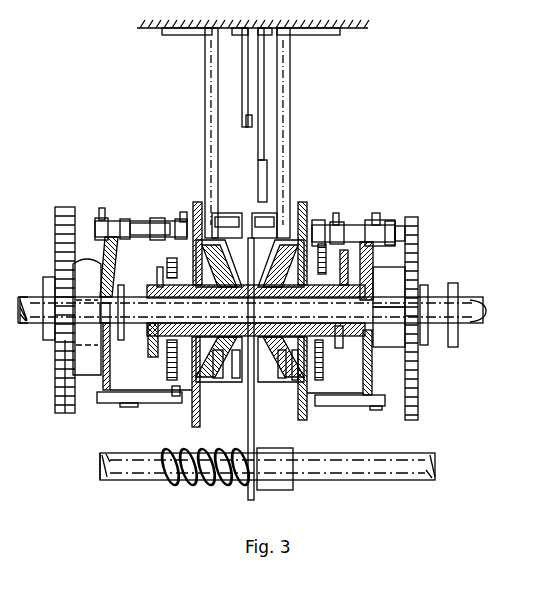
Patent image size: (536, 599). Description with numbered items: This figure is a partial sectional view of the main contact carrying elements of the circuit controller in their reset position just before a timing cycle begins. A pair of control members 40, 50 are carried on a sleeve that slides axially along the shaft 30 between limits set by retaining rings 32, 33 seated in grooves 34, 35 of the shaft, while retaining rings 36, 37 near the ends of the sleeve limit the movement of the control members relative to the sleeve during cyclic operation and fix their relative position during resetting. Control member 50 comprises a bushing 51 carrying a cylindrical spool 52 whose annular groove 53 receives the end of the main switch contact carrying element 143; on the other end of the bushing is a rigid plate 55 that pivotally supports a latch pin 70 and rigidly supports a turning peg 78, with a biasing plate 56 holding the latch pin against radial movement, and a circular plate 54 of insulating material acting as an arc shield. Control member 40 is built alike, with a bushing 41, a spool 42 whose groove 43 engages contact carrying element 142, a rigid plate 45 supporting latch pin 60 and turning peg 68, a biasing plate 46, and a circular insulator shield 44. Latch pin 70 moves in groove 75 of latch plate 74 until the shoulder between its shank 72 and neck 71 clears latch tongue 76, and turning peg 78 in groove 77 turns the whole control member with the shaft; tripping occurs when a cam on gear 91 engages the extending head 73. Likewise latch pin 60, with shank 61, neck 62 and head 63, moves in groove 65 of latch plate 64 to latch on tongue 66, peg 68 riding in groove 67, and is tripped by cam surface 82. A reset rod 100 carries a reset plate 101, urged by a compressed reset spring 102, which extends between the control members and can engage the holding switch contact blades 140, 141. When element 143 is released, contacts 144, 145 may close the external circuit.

The shaft 30 is at (252, 315).
The retaining ring 32 is at (122, 332).
The retaining ring 33 is at (363, 298).
The groove 34 is at (112, 311).
The groove 35 is at (360, 323).
The retaining ring 36 is at (157, 333).
The retaining ring 37 is at (342, 348).
The control member 40 is at (216, 416).
The bushing 41 is at (205, 290).
The spool 42 is at (236, 380).
The groove 43 is at (218, 378).
The circular insulator shield 44 is at (194, 415).
The rigid plate 45 is at (177, 392).
The biasing plate 46 is at (186, 214).
The control member 50 is at (276, 416).
The bushing 51 is at (310, 290).
The cylindrical spool 52 is at (296, 382).
The annular groove 53 is at (283, 380).
The circular plate 54 is at (303, 418).
The rigid plate 55 is at (323, 384).
The biasing plate 56 is at (334, 213).
The latch pin 60 is at (157, 220).
The shank 61 is at (140, 222).
The neck 62 is at (112, 220).
The head 63 is at (97, 232).
The latch plate 64 is at (78, 258).
The groove 65 is at (103, 218).
The latch tongue 66 is at (118, 246).
The groove 67 is at (108, 403).
The turning peg 68 is at (138, 404).
The latch pin 70 is at (342, 222).
The neck 71 is at (360, 225).
The shank 72 is at (380, 228).
The head 73 is at (393, 226).
The latch plate 74 is at (419, 266).
The groove 75 is at (378, 214).
The latch tongue 76 is at (372, 268).
The groove 77 is at (370, 407).
The turning peg 78 is at (385, 407).
The cam surface 82 is at (82, 366).
The gear 91 is at (420, 231).
The reset rod 100 is at (413, 480).
The reset plate 101 is at (262, 182).
The reset spring 102 is at (212, 486).
The holding switch contact blade 140 is at (243, 67).
The holding switch contact blade 141 is at (260, 82).
The contact carrying element 142 is at (199, 200).
The contact carrying element 143 is at (333, 200).
The contact 144 is at (259, 224).
The contact 145 is at (259, 200).